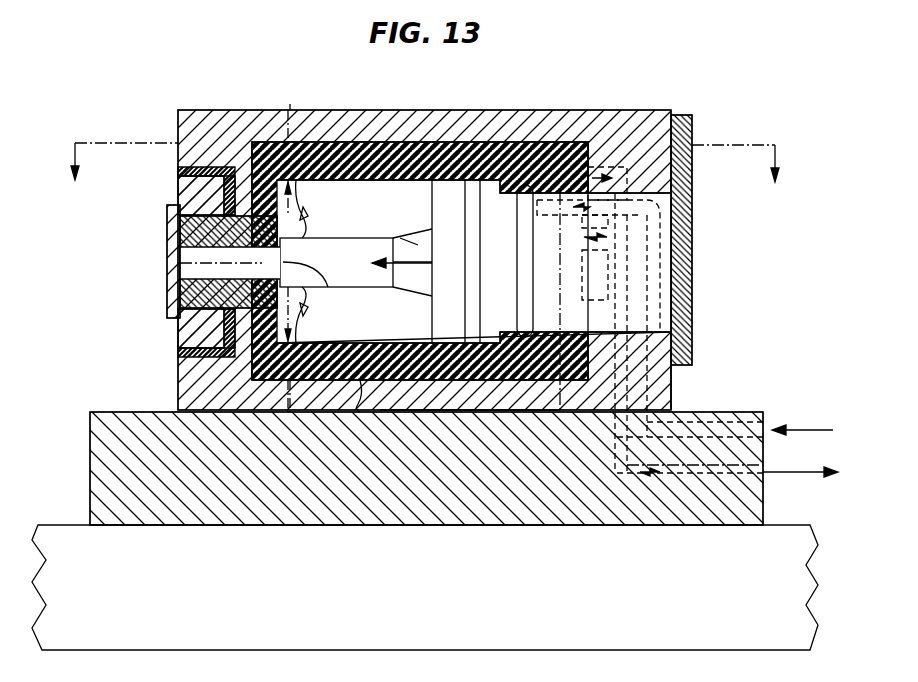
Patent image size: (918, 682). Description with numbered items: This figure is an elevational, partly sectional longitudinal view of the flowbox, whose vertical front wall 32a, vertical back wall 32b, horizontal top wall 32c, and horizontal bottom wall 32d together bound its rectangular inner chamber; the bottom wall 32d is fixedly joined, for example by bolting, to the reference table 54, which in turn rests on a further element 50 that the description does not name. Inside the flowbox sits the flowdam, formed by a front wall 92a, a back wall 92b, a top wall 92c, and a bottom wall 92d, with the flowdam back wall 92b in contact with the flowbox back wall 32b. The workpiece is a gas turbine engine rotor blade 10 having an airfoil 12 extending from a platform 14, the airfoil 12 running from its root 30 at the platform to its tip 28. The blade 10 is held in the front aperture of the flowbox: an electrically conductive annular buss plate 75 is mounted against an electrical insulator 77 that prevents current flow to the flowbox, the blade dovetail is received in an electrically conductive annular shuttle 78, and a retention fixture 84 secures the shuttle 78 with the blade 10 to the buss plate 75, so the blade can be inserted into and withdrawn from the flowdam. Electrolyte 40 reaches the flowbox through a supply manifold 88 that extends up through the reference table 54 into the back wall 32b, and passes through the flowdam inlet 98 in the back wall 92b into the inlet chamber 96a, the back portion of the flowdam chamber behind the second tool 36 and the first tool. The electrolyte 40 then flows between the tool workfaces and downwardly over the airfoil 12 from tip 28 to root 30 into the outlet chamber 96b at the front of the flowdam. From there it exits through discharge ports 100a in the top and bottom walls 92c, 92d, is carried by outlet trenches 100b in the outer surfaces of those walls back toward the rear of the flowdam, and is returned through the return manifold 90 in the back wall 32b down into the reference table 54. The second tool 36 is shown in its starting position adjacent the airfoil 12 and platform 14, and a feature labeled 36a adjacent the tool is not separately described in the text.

The workpiece 10 is at (320, 243).
The airfoil 12 is at (356, 250).
The platform 14 is at (186, 282).
The tip 28 is at (404, 275).
The root 30 is at (332, 275).
The front wall 32a is at (180, 166).
The back wall 32b is at (672, 386).
The top wall 32c is at (608, 111).
The bottom wall 32d is at (420, 412).
The second tool 36 is at (377, 328).
The chamber wall 36a is at (404, 252).
The electrolyte 40 is at (810, 430).
The substrate 50 is at (211, 583).
The reference table 54 is at (90, 414).
The buss plate 75 is at (178, 204).
The electrical insulator 77 is at (185, 352).
The shuttle 78 is at (170, 244).
The retention fixture 84 is at (180, 268).
The supply manifold 88 is at (694, 212).
The return manifold 90 is at (660, 268).
The flowdam front wall 92a is at (252, 362).
The flowdam back wall 92b is at (534, 384).
The flowdam top wall 92c is at (458, 143).
The flowdam bottom wall 92d is at (484, 382).
The inlet chamber 96a is at (518, 178).
The outlet chamber 96b is at (190, 330).
The flowdam inlet 98 is at (526, 261).
The flowdam discharge ports 100a is at (294, 436).
The outlet trenches 100b is at (370, 146).